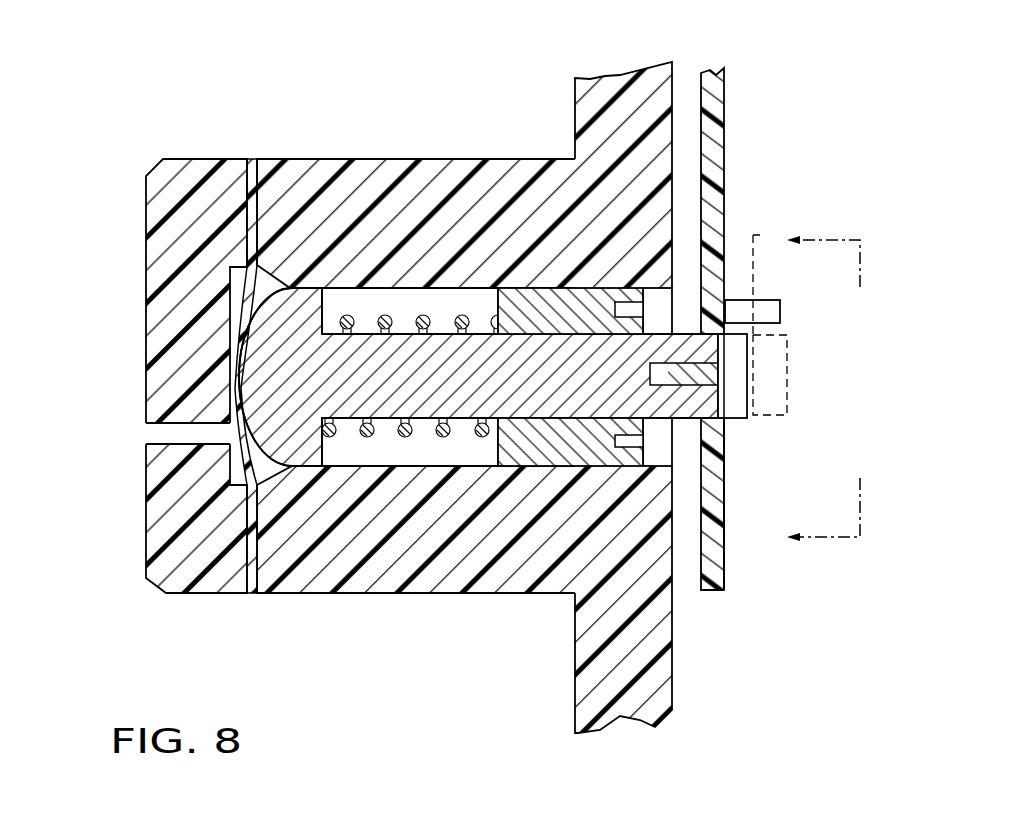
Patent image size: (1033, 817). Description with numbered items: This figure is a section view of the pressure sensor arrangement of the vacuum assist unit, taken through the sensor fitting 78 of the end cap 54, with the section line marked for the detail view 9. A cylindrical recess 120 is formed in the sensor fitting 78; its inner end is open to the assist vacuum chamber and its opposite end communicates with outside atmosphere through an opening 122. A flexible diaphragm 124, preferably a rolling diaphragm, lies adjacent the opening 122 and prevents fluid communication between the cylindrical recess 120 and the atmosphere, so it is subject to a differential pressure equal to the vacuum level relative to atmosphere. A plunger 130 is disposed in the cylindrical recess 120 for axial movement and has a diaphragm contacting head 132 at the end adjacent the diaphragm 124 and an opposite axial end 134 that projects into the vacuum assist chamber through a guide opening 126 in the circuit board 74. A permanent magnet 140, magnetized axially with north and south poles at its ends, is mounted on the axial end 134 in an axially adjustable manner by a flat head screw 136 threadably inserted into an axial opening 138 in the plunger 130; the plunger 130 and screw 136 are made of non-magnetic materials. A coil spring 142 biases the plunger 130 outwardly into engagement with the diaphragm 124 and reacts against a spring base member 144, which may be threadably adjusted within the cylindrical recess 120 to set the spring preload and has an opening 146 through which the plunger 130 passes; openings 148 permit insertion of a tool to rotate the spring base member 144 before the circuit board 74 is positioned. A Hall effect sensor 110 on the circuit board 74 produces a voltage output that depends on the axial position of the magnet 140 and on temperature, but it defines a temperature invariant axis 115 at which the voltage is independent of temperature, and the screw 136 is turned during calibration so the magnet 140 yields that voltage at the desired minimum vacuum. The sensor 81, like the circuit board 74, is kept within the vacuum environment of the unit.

The end cap 54 is at (585, 60).
The circuit board 74 is at (722, 82).
The sensor fitting 78 is at (333, 160).
The sensor 81 is at (745, 570).
The Hall effect sensor 110 is at (760, 295).
The temperature invariant axis 115 is at (753, 238).
The cylindrical recess 120 is at (357, 297).
The opening 122 is at (173, 437).
The flexible diaphragm 124 is at (240, 327).
The guide opening 126 is at (712, 415).
The plunger 130 is at (437, 405).
The diaphragm contacting head 132 is at (237, 373).
The axial end 134 is at (687, 348).
The flat head screw 136 is at (697, 377).
The axial opening 138 is at (668, 377).
The permanent magnet 140 is at (735, 415).
The coil spring 142 is at (332, 432).
The spring base member 144 is at (543, 293).
The opening 146 is at (533, 405).
The openings 148 is at (627, 445).
The section line 9 is at (823, 389).